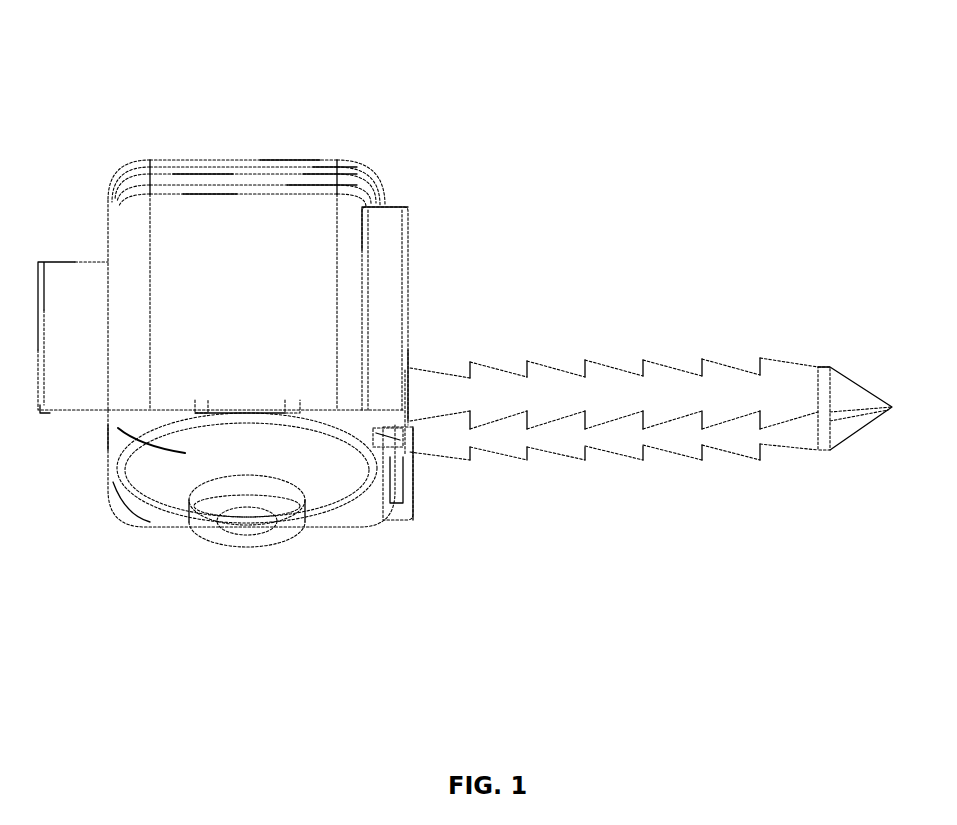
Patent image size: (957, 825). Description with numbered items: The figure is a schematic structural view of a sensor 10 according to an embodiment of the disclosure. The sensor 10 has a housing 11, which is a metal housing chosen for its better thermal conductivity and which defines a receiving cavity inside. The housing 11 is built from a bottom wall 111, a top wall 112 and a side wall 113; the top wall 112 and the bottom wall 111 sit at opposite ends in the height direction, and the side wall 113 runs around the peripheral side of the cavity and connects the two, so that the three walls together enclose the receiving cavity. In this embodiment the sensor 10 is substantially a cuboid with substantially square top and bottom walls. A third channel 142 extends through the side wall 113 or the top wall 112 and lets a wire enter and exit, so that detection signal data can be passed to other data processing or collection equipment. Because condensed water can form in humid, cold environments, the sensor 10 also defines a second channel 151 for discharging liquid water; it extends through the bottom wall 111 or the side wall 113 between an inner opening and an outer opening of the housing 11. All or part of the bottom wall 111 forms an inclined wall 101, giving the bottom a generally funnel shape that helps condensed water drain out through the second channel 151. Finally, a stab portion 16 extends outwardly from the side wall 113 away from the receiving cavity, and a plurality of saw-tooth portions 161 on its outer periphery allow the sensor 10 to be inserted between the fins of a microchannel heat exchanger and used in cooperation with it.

The sensor 10 is at (188, 70).
The housing 11 is at (177, 250).
The top wall 112 is at (340, 157).
The side wall 113 is at (320, 280).
The third channel 142 is at (52, 430).
The inclined wall 101 is at (308, 483).
The second channel 151 is at (243, 520).
The bottom wall 111 is at (347, 492).
The stab portion 16 is at (653, 405).
The saw-tooth portions 161 is at (553, 453).